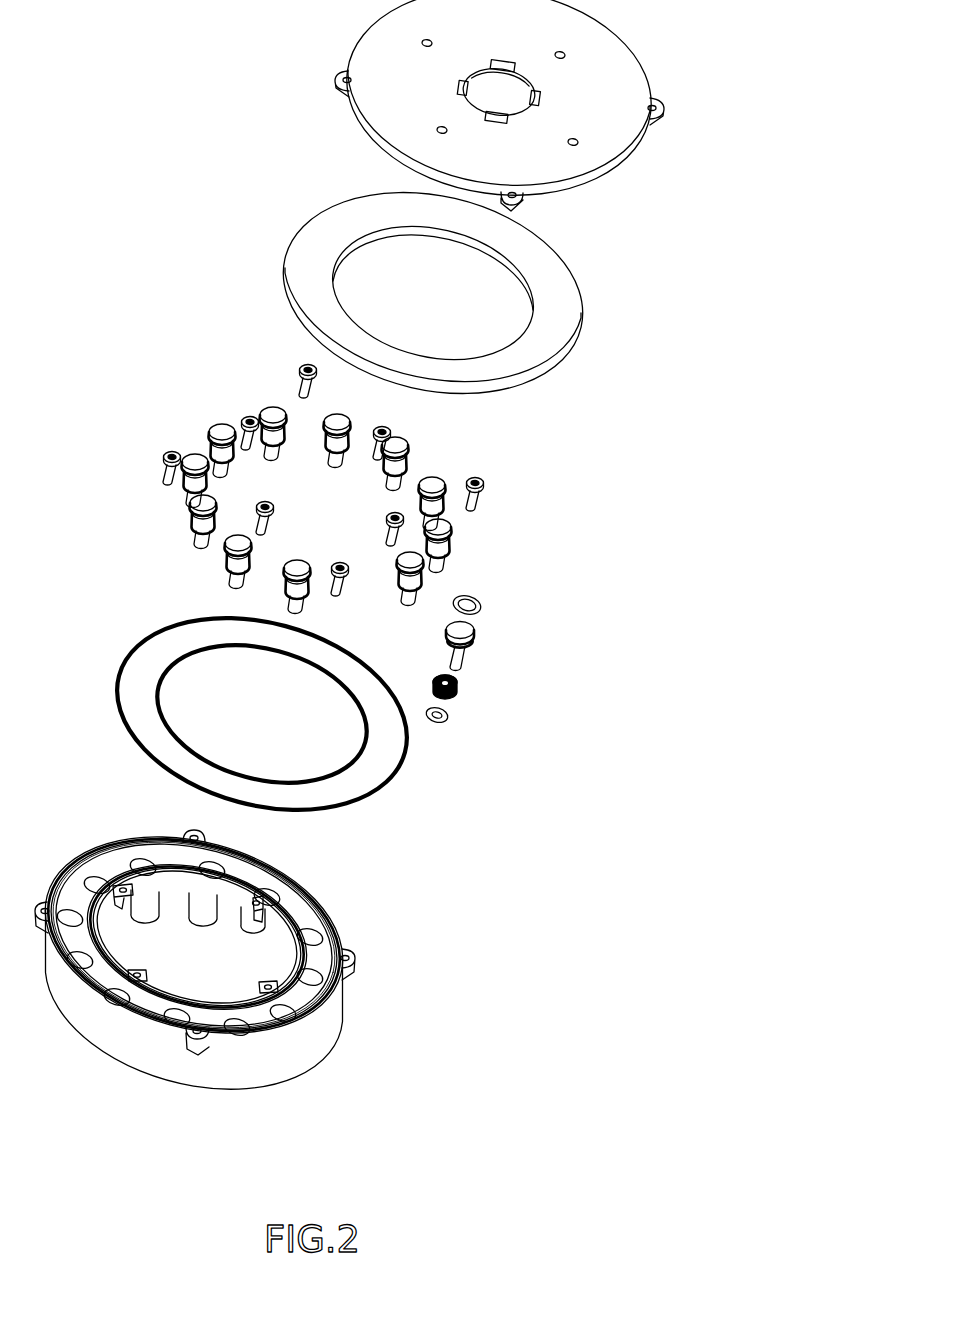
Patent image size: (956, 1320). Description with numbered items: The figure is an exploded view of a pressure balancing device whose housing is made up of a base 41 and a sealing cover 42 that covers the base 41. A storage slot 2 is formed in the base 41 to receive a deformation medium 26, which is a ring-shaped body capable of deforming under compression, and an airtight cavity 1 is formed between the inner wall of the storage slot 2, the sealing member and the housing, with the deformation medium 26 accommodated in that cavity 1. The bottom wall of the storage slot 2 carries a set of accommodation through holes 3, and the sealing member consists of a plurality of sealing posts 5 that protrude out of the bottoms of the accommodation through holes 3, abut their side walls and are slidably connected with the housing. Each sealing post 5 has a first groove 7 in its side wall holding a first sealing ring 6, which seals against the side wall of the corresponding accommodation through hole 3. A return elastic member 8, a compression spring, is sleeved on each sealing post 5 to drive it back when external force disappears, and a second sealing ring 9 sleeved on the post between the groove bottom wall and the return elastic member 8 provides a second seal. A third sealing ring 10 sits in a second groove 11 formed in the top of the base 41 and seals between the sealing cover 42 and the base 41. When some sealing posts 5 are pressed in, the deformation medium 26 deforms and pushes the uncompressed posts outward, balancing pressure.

The airtight cavity 1 is at (266, 1022).
The storage slot 2 is at (320, 958).
The accommodation through hole 3 is at (292, 1020).
The sealing post 5 is at (197, 460).
The first sealing ring 6 is at (478, 600).
The first groove 7 is at (482, 640).
The return elastic member 8 is at (457, 690).
The second sealing ring 9 is at (448, 718).
The third sealing ring 10 is at (340, 773).
The second groove 11 is at (388, 1017).
The deformation medium 26 is at (546, 322).
The base 41 is at (123, 1030).
The sealing cover 42 is at (603, 153).